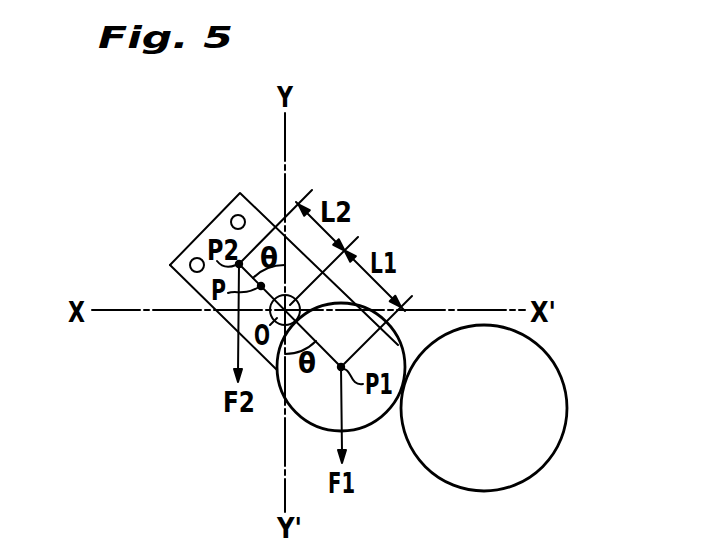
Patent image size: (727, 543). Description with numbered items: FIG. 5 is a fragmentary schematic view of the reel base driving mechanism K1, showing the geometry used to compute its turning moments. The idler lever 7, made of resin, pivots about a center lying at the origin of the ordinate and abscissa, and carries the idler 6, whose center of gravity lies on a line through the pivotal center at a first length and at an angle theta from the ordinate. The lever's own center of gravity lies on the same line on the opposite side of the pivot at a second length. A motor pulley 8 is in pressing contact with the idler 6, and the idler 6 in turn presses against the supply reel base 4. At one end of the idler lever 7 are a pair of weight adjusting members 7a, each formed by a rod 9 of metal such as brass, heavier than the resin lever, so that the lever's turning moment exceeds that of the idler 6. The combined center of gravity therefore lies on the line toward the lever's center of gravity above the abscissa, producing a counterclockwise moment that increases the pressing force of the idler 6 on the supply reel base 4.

The supply reel base 4 is at (547, 420).
The idler 6 is at (376, 420).
The idler lever 7 is at (197, 291).
The weight adjusting members 7a is at (244, 216).
The motor pulley 8 is at (270, 311).
The rod 9 is at (232, 218).
The reel base driving mechanism K1 is at (384, 196).